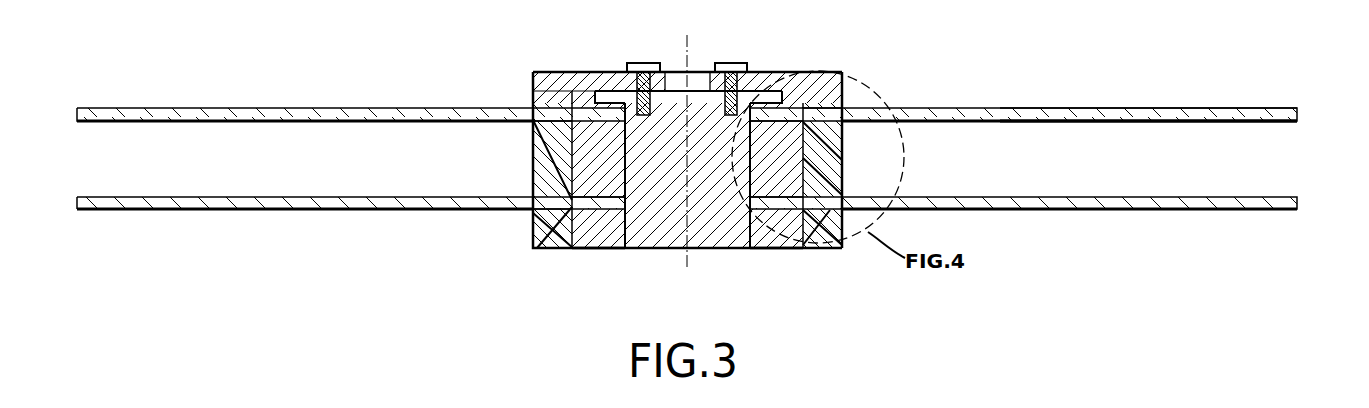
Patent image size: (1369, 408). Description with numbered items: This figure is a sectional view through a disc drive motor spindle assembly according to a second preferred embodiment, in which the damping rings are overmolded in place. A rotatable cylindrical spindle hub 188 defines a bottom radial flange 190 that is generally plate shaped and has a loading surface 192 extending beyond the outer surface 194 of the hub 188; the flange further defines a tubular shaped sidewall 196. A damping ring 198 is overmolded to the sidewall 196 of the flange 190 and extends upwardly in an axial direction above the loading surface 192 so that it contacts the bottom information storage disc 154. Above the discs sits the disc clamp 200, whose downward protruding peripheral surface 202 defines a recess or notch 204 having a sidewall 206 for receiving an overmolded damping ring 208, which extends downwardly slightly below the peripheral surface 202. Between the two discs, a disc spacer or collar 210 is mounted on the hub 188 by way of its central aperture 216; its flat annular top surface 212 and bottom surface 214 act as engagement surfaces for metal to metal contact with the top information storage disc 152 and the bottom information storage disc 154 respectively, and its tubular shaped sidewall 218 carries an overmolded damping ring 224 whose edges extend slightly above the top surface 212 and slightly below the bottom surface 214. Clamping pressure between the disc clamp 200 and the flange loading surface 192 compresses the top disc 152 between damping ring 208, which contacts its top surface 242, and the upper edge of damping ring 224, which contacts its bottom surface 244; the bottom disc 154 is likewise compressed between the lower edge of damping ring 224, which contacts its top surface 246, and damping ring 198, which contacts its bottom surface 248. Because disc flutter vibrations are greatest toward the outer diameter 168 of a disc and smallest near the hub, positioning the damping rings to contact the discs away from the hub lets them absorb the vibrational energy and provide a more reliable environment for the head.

The top information storage disc 152 is at (77, 122).
The bottom information storage disc 154 is at (77, 209).
The outer diameter 168 is at (1300, 108).
The spindle hub 188 is at (653, 165).
The bottom radial flange 190 is at (603, 237).
The loading surface 192 is at (607, 203).
The outer surface 194 is at (620, 142).
The tubular shaped sidewall 196 is at (543, 250).
The damping ring 198 is at (537, 222).
The disc clamp 200 is at (560, 72).
The peripheral surface 202 is at (589, 101).
The recess 204 is at (537, 92).
The sidewall 206 is at (533, 130).
The damping ring 208 is at (535, 101).
The disc spacer 210 is at (803, 177).
The top surface 212 is at (787, 110).
The bottom surface 214 is at (817, 250).
The central aperture 216 is at (815, 133).
The tubular shaped sidewall 218 is at (803, 158).
The damping ring 224 is at (823, 192).
The top surface 242 is at (1003, 108).
The bottom surface 244 is at (1003, 122).
The top surface 246 is at (1095, 197).
The bottom surface 248 is at (1095, 211).